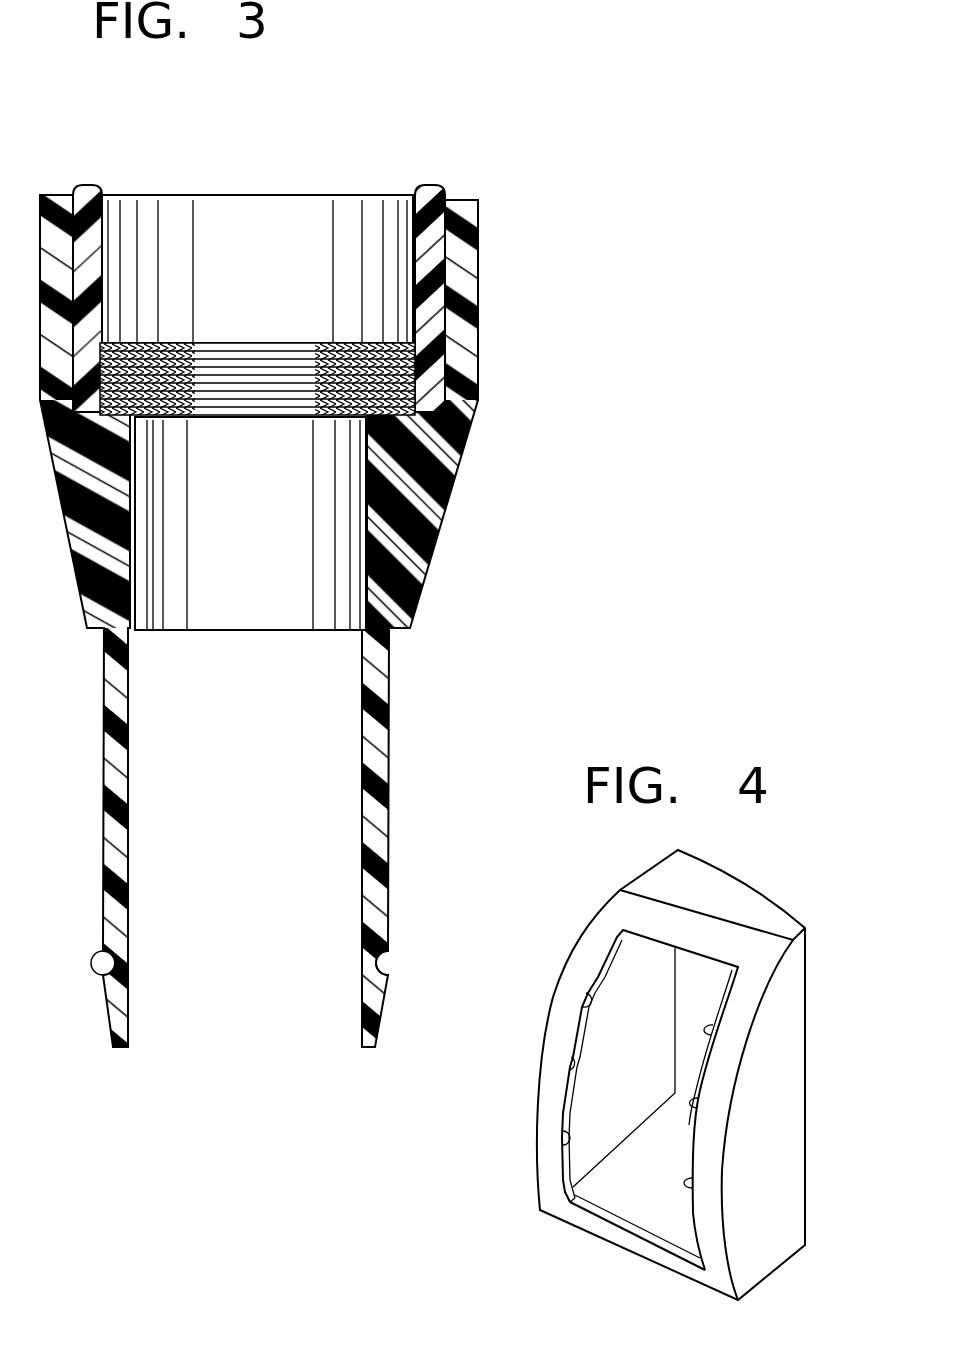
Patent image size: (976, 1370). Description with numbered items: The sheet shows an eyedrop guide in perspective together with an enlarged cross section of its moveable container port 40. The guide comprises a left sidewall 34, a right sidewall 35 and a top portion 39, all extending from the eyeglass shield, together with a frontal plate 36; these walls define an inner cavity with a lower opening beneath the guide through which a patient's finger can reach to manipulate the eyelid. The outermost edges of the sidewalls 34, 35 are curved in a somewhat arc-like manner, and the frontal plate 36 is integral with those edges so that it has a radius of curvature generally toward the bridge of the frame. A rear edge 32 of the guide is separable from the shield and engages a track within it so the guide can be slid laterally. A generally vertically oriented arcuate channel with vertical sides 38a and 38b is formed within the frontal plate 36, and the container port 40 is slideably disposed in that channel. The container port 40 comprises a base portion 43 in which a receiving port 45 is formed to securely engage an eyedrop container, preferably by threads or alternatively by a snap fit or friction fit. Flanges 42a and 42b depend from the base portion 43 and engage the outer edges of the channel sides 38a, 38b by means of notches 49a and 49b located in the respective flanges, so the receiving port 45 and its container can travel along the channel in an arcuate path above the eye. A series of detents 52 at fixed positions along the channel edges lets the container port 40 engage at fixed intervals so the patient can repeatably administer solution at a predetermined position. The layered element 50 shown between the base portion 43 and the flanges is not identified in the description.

In FIG. 3, the moveable container port 40 is at (60, 194).
In FIG. 3, the base portion 43 is at (462, 316).
In FIG. 3, the receiving port 45 is at (290, 196).
In FIG. 3, the laminated layer 50 is at (435, 408).
In FIG. 3, the flange 42a is at (378, 785).
In FIG. 3, the flange 42b is at (118, 787).
In FIG. 3, the notch 49a is at (372, 978).
In FIG. 3, the notch 49b is at (118, 977).
In FIG. 4, the rear edge 32 is at (808, 1073).
In FIG. 4, the left sidewall 34 is at (780, 1130).
In FIG. 4, the right sidewall 35 is at (650, 1058).
In FIG. 4, the frontal plate 36 is at (570, 1043).
In FIG. 4, the vertical side of channel 38a is at (697, 1237).
In FIG. 4, the vertical side of channel 38b is at (568, 1193).
In FIG. 4, the top portion 39 is at (688, 895).
In FIG. 4, the detents 52 is at (597, 1007).